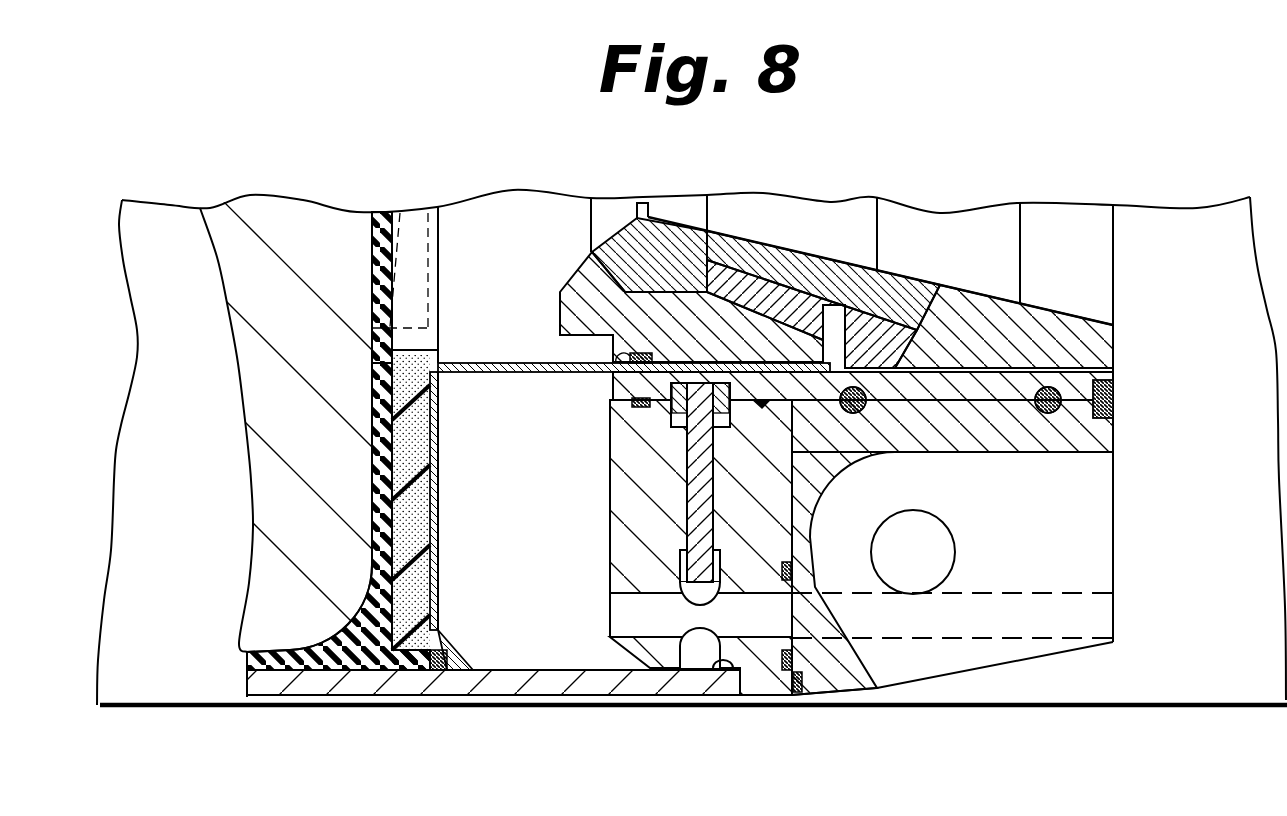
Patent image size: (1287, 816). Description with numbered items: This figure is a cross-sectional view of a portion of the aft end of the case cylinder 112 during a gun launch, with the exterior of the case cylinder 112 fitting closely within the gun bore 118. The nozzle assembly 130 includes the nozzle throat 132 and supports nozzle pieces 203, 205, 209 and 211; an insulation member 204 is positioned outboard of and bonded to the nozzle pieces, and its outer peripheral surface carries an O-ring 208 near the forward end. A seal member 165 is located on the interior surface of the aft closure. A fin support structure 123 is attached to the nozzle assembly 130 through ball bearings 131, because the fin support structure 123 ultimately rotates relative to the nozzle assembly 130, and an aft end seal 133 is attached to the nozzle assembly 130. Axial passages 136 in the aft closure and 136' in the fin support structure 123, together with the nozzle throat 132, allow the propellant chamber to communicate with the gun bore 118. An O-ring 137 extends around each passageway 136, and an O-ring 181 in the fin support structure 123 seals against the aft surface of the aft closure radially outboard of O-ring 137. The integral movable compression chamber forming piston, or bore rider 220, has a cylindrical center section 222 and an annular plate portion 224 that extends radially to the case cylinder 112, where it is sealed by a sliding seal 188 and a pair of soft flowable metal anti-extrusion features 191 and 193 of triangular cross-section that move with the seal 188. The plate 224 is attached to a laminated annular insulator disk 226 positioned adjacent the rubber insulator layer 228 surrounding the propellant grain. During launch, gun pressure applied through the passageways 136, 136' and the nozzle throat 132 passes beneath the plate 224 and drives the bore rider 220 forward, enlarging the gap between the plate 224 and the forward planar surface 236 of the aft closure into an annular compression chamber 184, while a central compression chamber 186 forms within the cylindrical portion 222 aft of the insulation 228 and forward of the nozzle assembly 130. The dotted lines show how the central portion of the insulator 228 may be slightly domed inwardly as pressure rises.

The case cylinder 112 is at (435, 685).
The gun bore 118 is at (1200, 703).
The fin support structure 123 is at (1114, 452).
The nozzle assembly 130 is at (1119, 285).
The ball bearings 131 is at (873, 408).
The nozzle throat 132 is at (662, 202).
The aft end seal 133 is at (1114, 397).
The axial passage 136 is at (664, 615).
The axial passage 136' is at (1003, 574).
The O-ring 137 is at (780, 665).
The seal member 165 is at (632, 403).
The O-ring 181 is at (805, 692).
The annular compression chamber 184 is at (550, 582).
The central compression chamber 186 is at (515, 245).
The sliding seal 188 is at (445, 672).
The anti-extrusion feature 191 is at (405, 660).
The anti-extrusion feature 193 is at (460, 678).
The nozzle piece 203 is at (617, 245).
The insulation member 204 is at (590, 270).
The nozzle piece 205 is at (778, 248).
The O-ring 208 is at (614, 356).
The nozzle piece 209 is at (900, 287).
The nozzle piece 211 is at (1068, 328).
The movable compression chamber forming piston (bore rider) 220 is at (490, 360).
The cylindrical center section 222 is at (373, 323).
The annular plate portion 224 is at (440, 530).
The annular insulator disk 226 is at (412, 466).
The rubber insulator layer 228 is at (378, 400).
The forward planar surface 236 is at (608, 492).